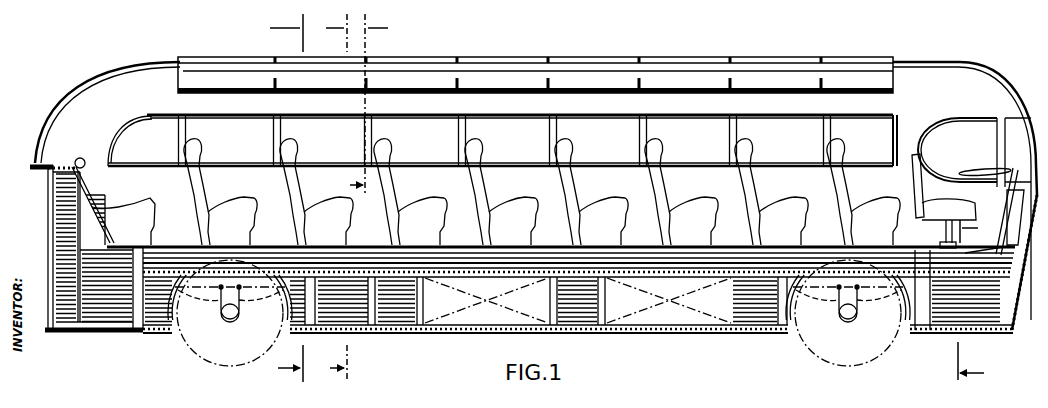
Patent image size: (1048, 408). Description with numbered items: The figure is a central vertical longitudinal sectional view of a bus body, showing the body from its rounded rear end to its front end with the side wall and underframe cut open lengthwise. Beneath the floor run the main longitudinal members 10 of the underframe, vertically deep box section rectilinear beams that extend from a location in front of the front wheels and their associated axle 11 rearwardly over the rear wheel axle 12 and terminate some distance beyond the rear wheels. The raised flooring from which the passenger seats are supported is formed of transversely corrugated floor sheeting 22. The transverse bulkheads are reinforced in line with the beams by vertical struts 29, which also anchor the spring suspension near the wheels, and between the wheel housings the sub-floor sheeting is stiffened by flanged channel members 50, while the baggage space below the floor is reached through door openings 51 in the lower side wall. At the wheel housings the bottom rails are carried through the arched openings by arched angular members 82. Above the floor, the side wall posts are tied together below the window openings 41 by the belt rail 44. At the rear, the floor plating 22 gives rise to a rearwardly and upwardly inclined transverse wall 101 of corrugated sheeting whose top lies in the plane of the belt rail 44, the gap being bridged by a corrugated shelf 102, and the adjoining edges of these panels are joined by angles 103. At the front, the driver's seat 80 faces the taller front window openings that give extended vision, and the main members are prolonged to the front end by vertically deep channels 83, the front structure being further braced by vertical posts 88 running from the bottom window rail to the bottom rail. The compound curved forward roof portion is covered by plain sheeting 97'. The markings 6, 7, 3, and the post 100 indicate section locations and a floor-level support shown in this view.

The plain sheeting 97' is at (536, 190).
The window openings 41 is at (520, 149).
The floor sheeting 22 is at (157, 246).
The floor support post 100 is at (197, 246).
The vertical struts 29 is at (922, 334).
The flanged channel members 50 is at (600, 335).
The door openings 51 is at (472, 330).
The arched angular members 82 is at (178, 322).
The rear wheel axle 12 is at (231, 324).
The front wheel axle 11 is at (848, 323).
The belt rail 44 is at (32, 165).
The shelf plating 102 is at (56, 165).
The angles 103 is at (83, 158).
The inclined transverse wall 101 is at (100, 207).
The driver's seat 80 is at (952, 203).
The vertical posts 88 is at (1014, 225).
The channels 83 is at (1010, 303).
The section line 6- 6 is at (278, 198).
The section line 7- 7 is at (331, 198).
The main longitudinal members 10 is at (371, 104).
The section line 3- 3 is at (977, 301).